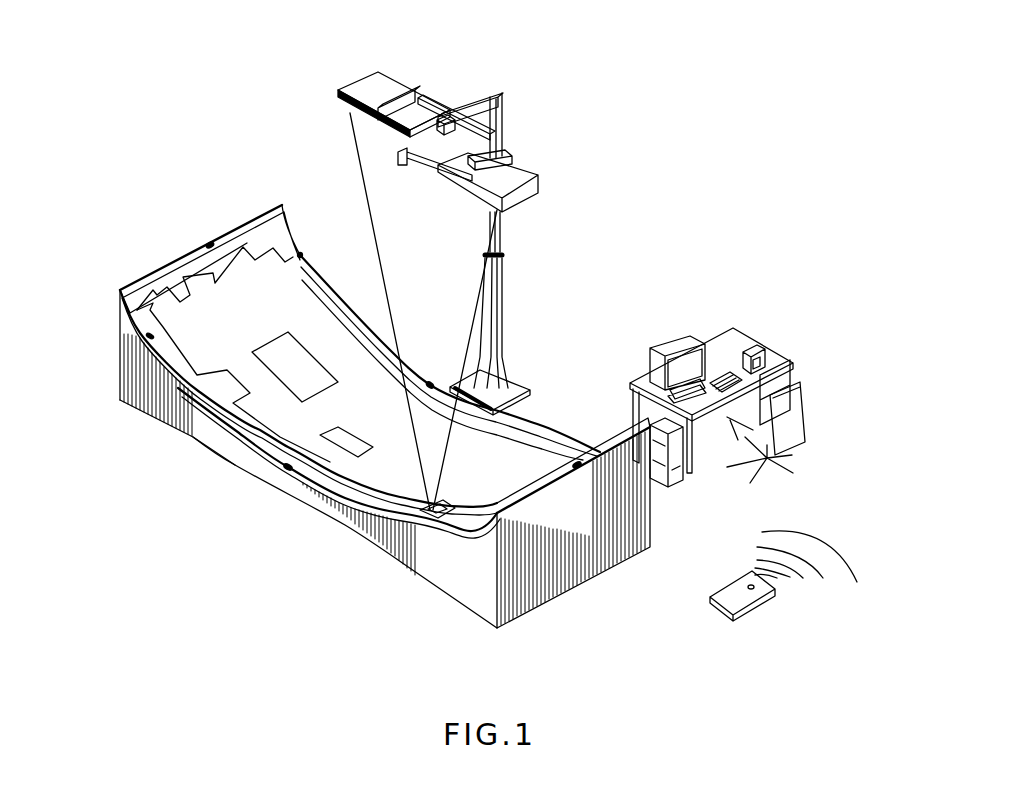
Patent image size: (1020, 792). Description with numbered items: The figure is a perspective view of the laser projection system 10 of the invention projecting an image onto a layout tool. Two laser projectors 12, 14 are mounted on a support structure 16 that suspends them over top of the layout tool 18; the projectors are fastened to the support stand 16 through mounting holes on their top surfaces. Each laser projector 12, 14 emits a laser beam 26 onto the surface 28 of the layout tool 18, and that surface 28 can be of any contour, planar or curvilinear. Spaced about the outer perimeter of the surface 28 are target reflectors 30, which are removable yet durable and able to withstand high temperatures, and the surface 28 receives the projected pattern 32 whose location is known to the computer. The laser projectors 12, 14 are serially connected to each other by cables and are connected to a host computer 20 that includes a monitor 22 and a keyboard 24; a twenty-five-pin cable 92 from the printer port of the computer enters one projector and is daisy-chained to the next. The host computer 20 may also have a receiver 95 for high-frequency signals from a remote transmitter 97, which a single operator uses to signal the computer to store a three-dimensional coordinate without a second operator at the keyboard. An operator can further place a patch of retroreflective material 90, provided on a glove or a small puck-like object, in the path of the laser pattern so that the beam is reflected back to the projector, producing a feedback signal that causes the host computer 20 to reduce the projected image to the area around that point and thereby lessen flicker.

The laser projection system 10 is at (523, 281).
The laser projector 12 is at (385, 97).
The laser projector 14 is at (530, 193).
The support structure 16 is at (498, 100).
The layout tool 18 is at (590, 543).
The host computer 20 is at (676, 482).
The monitor 22 is at (722, 350).
The keyboard 24 is at (727, 367).
The laser beam 26 is at (468, 354).
The surface 28 is at (137, 310).
The target reflectors 30 is at (210, 245).
The pattern 32 is at (250, 430).
The patch of retroreflective material 90 is at (437, 513).
The 25-pin cable 92 is at (581, 429).
The receiver 95 is at (763, 364).
The remote transmitter 97 is at (760, 603).